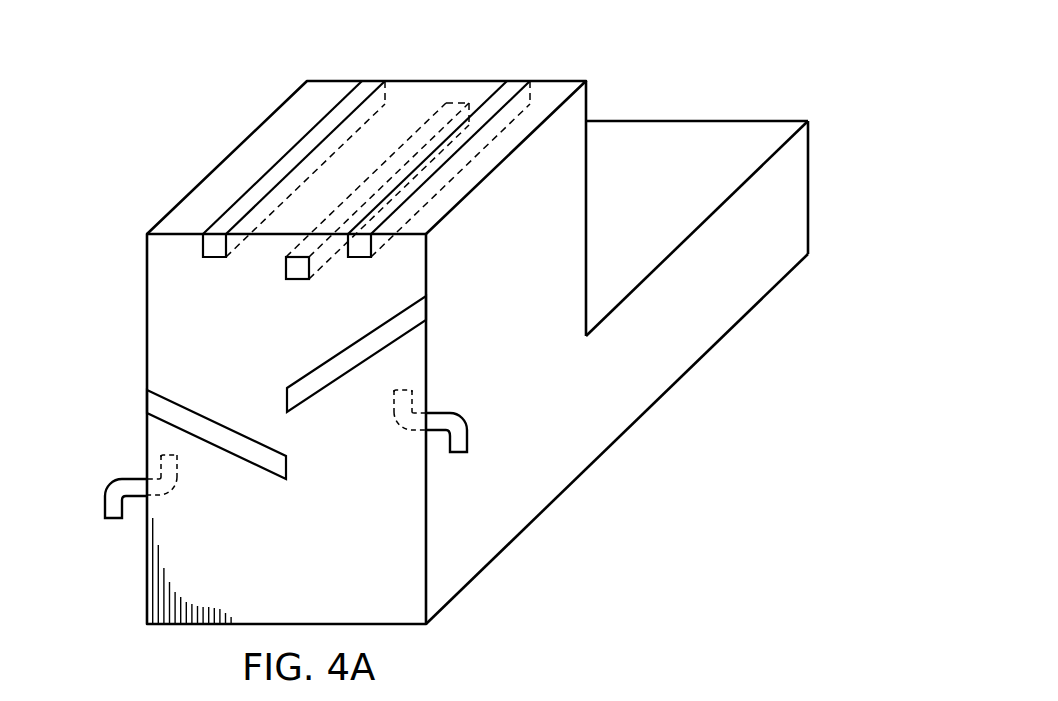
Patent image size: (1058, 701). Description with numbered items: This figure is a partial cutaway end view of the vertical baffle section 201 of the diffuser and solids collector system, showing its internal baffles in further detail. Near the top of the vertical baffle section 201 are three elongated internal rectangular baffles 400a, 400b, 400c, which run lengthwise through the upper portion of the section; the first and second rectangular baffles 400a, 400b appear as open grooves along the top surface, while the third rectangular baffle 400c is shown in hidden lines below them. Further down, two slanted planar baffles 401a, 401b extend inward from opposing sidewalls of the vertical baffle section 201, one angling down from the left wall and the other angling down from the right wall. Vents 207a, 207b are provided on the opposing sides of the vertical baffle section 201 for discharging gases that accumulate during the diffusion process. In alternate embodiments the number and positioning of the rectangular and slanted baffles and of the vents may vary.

The vertical baffle section 201 is at (232, 150).
The elongated internal rectangular baffle 400a is at (344, 93).
The elongated internal rectangular baffle 400b is at (484, 90).
The elongated internal rectangular baffle 400c is at (286, 274).
The slanted planar baffle 401a is at (245, 461).
The slanted planar baffle 401b is at (326, 388).
The vent 207a is at (104, 512).
The vent 207b is at (467, 440).